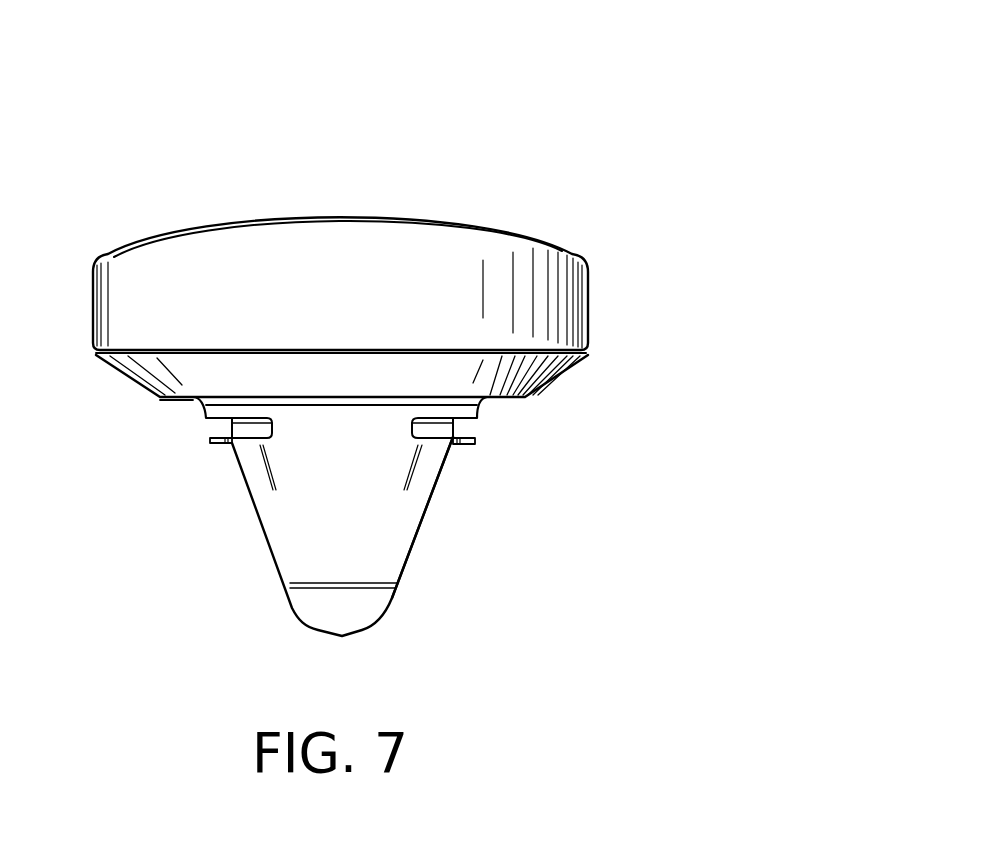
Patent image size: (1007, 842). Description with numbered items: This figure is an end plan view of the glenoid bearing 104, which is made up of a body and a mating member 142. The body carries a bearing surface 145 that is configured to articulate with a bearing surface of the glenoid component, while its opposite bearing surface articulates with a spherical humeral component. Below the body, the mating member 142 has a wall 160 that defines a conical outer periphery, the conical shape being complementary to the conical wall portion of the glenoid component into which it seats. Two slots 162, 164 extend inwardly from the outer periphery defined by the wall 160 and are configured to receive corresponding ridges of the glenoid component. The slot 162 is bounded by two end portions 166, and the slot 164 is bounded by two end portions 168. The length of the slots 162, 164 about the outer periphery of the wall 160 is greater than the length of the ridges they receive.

The glenoid bearing 104 is at (537, 166).
The mating member 142 is at (422, 557).
The bearing surface 145 is at (173, 399).
The wall 160 is at (264, 533).
The slot 162 is at (225, 428).
The slot 164 is at (458, 420).
The end portions 166 is at (258, 438).
The end portions 168 is at (420, 440).